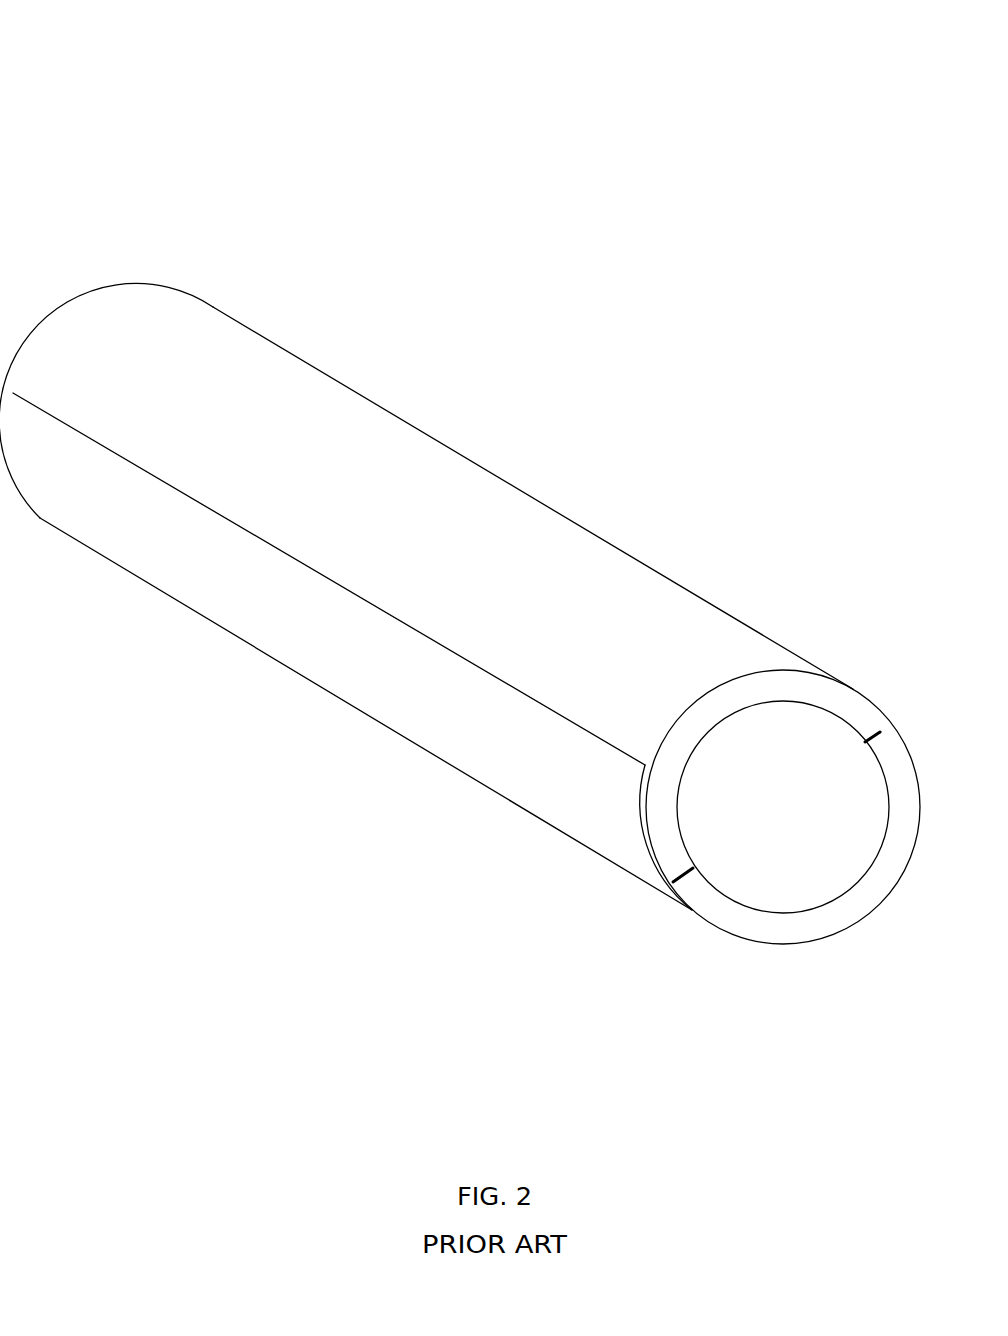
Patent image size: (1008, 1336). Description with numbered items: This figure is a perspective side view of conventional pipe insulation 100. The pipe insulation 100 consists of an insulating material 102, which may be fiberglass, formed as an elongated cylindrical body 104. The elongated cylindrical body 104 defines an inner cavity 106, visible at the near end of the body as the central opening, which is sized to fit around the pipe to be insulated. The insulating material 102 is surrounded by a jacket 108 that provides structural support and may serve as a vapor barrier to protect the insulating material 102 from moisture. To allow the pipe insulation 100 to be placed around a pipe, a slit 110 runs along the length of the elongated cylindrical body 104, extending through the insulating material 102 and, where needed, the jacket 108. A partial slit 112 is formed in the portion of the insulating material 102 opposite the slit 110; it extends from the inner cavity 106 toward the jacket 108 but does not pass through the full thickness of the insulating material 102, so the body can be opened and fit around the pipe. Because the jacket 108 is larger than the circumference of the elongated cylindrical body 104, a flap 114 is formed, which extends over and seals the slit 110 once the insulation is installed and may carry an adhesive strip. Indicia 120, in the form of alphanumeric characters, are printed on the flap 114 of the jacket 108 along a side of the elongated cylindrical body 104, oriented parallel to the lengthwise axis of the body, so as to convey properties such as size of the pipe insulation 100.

The pipe insulation 100 is at (93, 60).
The insulating material 102 is at (843, 910).
The elongated cylindrical body 104 is at (222, 830).
The inner cavity 106 is at (806, 824).
The jacket 108 is at (532, 532).
The slit 110 is at (688, 876).
The partial slit 112 is at (870, 737).
The flap 114 is at (612, 824).
The indicia 120 is at (337, 619).